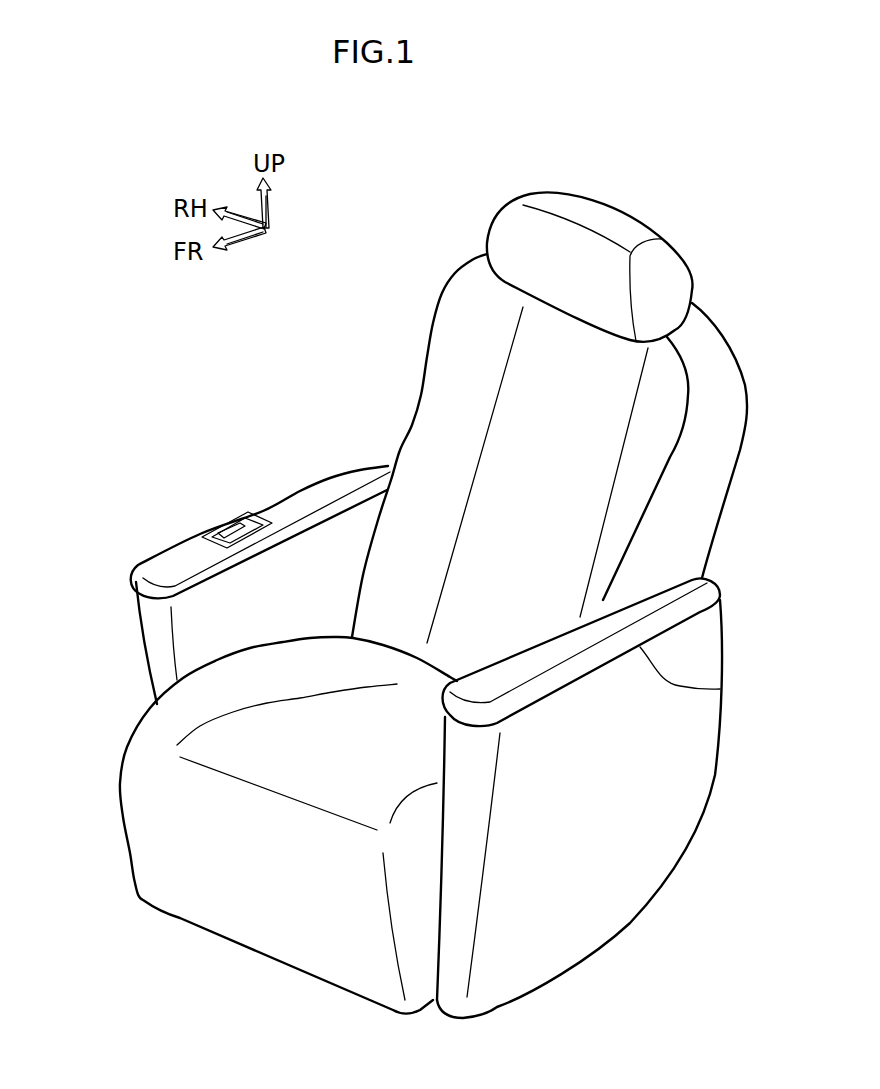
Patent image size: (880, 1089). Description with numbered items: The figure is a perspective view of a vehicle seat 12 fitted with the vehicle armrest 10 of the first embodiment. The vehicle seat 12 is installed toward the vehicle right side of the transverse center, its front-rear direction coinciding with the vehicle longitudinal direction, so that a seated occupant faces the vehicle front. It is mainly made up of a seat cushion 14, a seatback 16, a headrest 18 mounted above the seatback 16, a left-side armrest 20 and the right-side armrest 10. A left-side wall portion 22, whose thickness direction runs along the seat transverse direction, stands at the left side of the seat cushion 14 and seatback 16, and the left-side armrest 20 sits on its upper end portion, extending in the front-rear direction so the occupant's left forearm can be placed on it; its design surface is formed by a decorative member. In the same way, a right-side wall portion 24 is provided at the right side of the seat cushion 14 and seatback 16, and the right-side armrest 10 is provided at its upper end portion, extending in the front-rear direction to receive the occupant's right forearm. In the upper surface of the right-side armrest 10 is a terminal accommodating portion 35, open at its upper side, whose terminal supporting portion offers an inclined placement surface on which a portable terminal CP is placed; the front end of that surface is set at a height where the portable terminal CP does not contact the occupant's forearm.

The vehicle armrest 10 is at (173, 540).
The vehicle seat 12 is at (432, 220).
The seat cushion 14 is at (213, 665).
The seatback 16 is at (413, 415).
The headrest 18 is at (607, 202).
The left-side armrest 20 is at (720, 689).
The left-side wall portion 22 is at (713, 770).
The right-side wall portion 24 is at (143, 640).
The terminal accommodating portion 35 is at (238, 518).
The portable terminal CP is at (253, 518).